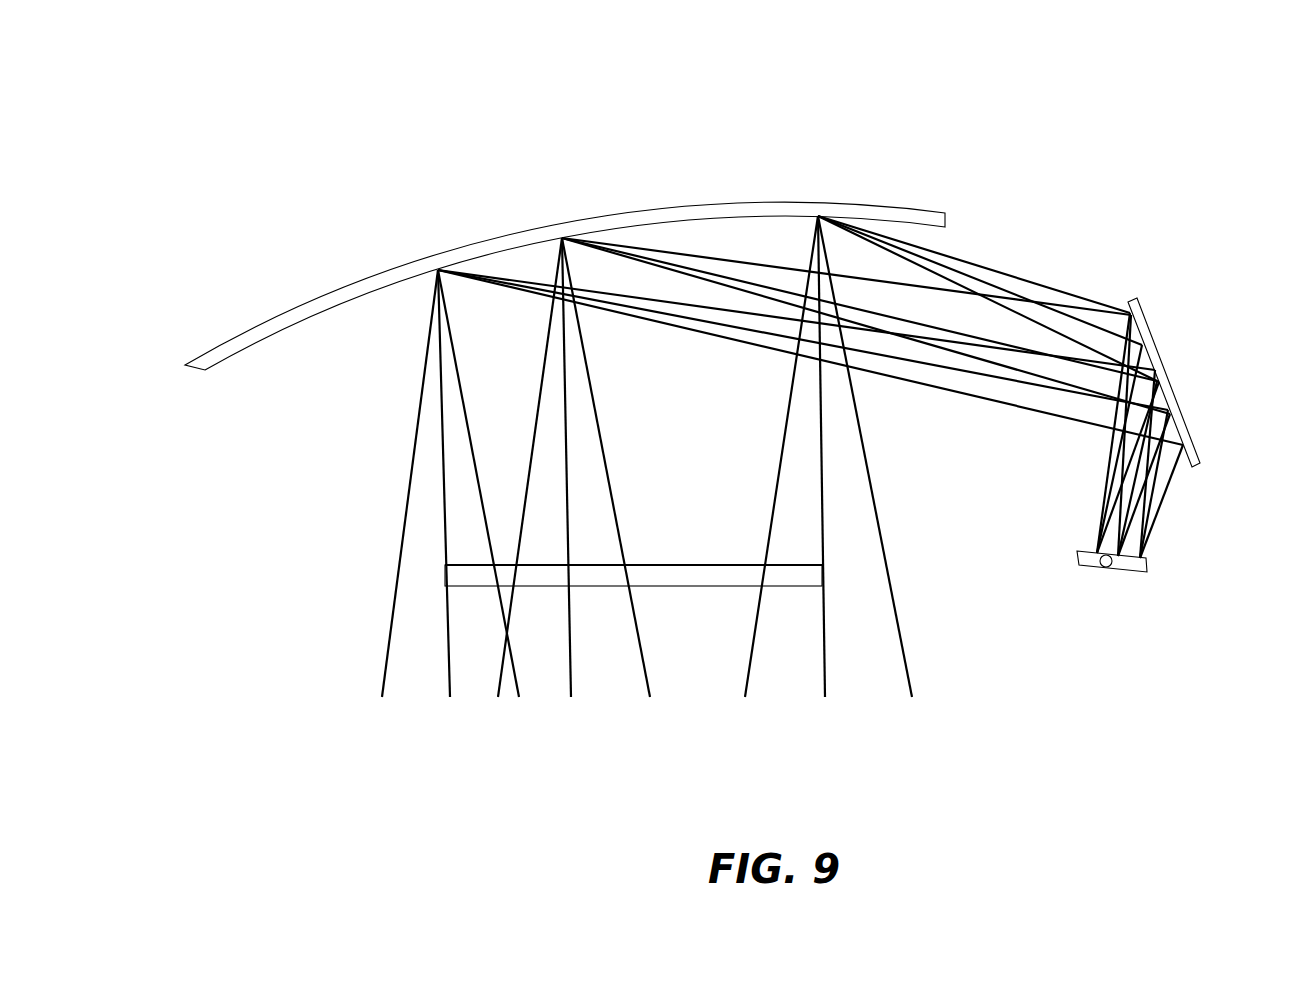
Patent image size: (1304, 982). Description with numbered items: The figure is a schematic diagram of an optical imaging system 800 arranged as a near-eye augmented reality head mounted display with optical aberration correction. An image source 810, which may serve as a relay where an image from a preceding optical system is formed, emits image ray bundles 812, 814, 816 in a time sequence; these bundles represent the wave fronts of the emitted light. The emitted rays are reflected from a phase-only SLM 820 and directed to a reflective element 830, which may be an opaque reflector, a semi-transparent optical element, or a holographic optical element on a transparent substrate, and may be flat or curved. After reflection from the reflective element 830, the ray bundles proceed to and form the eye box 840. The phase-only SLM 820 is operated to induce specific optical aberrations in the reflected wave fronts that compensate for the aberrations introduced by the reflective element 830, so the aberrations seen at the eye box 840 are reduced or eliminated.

The optical imaging system 800 is at (737, 61).
The image source 810 is at (1147, 574).
The image ray bundle 812 is at (1150, 540).
The image ray bundle 814 is at (1108, 569).
The image ray bundle 816 is at (1090, 533).
The phase-only SLM 820 is at (1177, 373).
The reflective element 830 is at (898, 198).
The eye box 840 is at (670, 590).